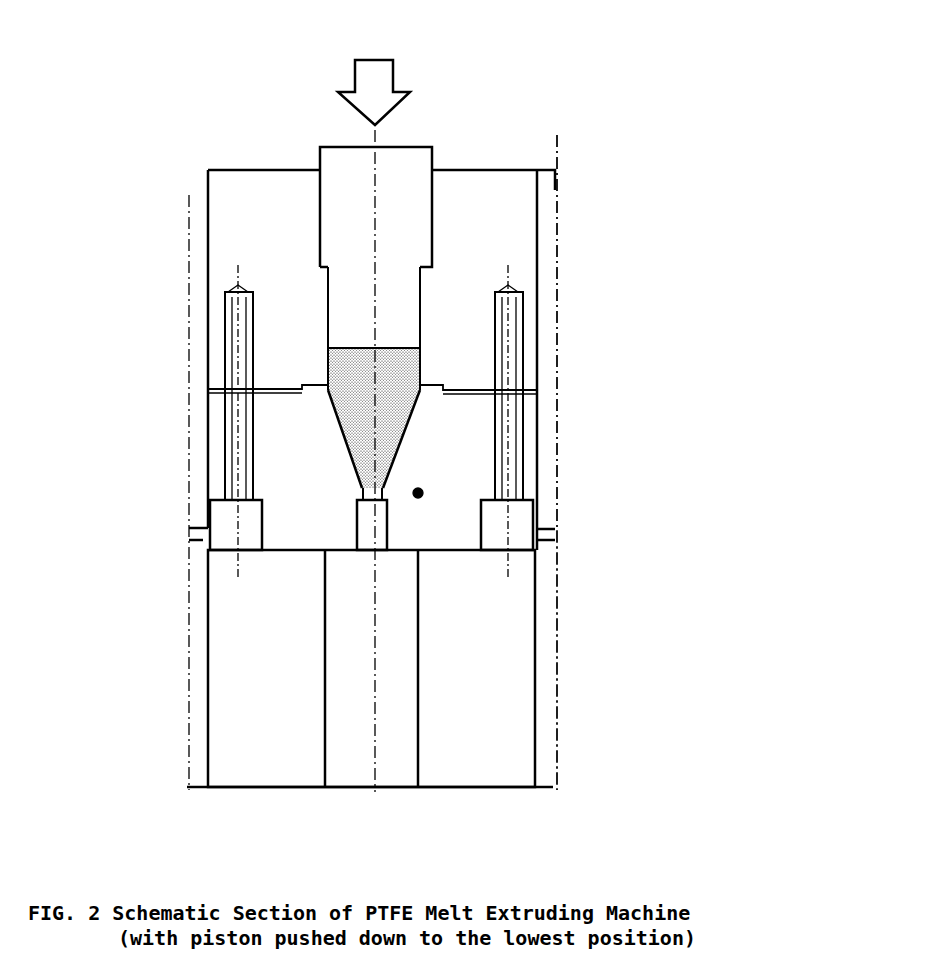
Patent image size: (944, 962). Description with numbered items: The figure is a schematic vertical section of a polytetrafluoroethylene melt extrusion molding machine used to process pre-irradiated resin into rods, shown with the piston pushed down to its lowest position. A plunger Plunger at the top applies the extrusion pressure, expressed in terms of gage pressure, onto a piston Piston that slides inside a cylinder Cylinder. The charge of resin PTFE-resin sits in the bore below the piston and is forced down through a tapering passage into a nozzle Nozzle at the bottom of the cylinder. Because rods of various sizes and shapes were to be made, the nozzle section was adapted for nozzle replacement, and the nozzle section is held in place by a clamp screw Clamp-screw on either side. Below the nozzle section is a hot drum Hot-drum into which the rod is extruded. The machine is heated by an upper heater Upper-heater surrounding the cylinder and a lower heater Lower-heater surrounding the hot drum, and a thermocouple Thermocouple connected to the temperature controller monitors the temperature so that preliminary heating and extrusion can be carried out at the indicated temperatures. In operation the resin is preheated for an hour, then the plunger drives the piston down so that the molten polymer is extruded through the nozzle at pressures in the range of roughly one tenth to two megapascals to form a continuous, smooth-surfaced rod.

The plunger Plunger is at (555, 68).
The piston Piston is at (408, 163).
The cylinder Cylinder is at (252, 216).
The upper heater Upper-heater is at (557, 210).
The PTFE resin PTFE-resin is at (401, 422).
The nozzle Nozzle is at (329, 487).
The clamp screw Clamp-screw is at (520, 512).
The lower heater Lower-heater is at (553, 583).
The hot drum Hot-drum is at (242, 716).
The thermocouple in temperature controller Thermocouple is at (437, 509).